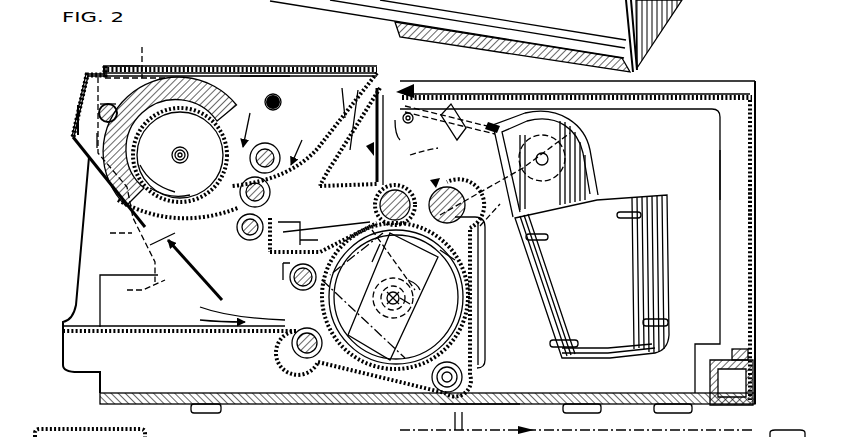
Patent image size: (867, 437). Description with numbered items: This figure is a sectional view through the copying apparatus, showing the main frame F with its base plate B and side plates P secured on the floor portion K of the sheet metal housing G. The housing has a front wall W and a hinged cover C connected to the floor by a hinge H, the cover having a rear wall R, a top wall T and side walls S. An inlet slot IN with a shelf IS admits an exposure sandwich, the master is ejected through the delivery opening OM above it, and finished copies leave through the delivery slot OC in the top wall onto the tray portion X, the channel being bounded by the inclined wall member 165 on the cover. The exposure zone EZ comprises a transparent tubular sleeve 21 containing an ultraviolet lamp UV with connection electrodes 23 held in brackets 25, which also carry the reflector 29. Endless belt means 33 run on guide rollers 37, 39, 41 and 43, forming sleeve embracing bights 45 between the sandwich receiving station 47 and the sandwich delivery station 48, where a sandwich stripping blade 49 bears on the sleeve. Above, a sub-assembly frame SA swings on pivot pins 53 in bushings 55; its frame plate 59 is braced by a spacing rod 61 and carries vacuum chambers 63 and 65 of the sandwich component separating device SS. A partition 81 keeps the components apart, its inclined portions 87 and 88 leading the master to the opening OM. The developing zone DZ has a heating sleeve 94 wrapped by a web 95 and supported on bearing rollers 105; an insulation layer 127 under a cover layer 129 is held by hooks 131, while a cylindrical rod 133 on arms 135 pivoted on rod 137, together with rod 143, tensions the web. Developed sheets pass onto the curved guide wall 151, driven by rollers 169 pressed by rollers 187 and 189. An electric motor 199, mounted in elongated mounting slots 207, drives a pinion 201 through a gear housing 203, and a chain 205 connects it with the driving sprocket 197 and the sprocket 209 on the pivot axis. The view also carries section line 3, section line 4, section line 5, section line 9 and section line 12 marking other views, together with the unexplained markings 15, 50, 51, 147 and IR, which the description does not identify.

The section line 3- 3 is at (347, 425).
The section line 4- 4 is at (97, 100).
The section line 5- 5 is at (166, 57).
The section line 9- 9 is at (261, 85).
The section line 12- 12 is at (392, 50).
The feed rollers 15 is at (276, 128).
The tubular sleeve 21 is at (432, 358).
The connection electrodes 23 is at (411, 302).
The brackets 25 is at (416, 291).
The reflector 29 is at (384, 243).
The endless flexible belt means 33 is at (474, 322).
The guide roller 37 is at (291, 347).
The guide roller 39 is at (372, 327).
The guide roller 41 is at (497, 218).
The guide roller 43 is at (463, 378).
The sleeve embracing bights 45 is at (473, 336).
The sandwich receiving station 47 is at (313, 324).
The sandwich delivery station 48 is at (384, 260).
The sandwich stripping blade 49 is at (376, 207).
The belt 50 is at (324, 290).
The tray 51 is at (298, 237).
The pivot pins 53 is at (413, 132).
The embossments or bushings 55 is at (414, 119).
The frame plate 59 is at (234, 57).
The bracing and spacing rod 61 is at (282, 103).
The vacuum chamber 63 is at (349, 195).
The vacuum chamber 65 is at (323, 237).
The partition 81 is at (280, 235).
The inclined portion 87 is at (230, 240).
The inclined portion 88 is at (243, 233).
The sleeve 94 is at (150, 187).
The web 95 is at (174, 153).
The bearing rollers 105 is at (155, 236).
The insulation layer 127 is at (160, 84).
The cover layer 129 is at (108, 185).
The hooks 131 is at (212, 196).
The cylindrical rod 133 is at (230, 150).
The arms 135 is at (102, 112).
The rod 137 is at (76, 126).
The rod 143 is at (186, 147).
The liner 147 is at (136, 168).
The curved guide wall 151 is at (313, 155).
The inclined wall member 165 is at (308, 87).
The rollers 169 is at (270, 193).
The rollers 187 is at (272, 150).
The rollers 189 is at (237, 250).
The driving sprocket 197 is at (441, 173).
The electric motor 199 is at (600, 277).
The driving pinion 201 is at (529, 157).
The housing 203 is at (592, 161).
The chain 205 is at (497, 222).
The elongated mounting slots 207 is at (643, 215).
The sprocket 209 is at (415, 112).
The belt A is at (750, 433).
The base plate B is at (189, 393).
The hinged cover C is at (785, 432).
The top wall T is at (600, 423).
The housing G is at (760, 104).
The tray portion X is at (688, 96).
The front wall W is at (73, 117).
The frame SA is at (97, 141).
The developing zone DZ is at (105, 157).
The delivery opening OM is at (138, 253).
The shelf IS is at (148, 328).
The inlet slot IN is at (212, 318).
The inner roller IR is at (171, 138).
The sandwich component separating device SS is at (388, 136).
The delivery slot OC is at (396, 88).
The ultraviolet ray emitting lamp UV is at (400, 291).
The exposure zone EZ is at (457, 348).
The floor portion K is at (492, 408).
The side plates P is at (560, 251).
The main frame F is at (703, 172).
The side walls S is at (742, 203).
The rear wall R is at (757, 276).
The hinge H is at (753, 358).